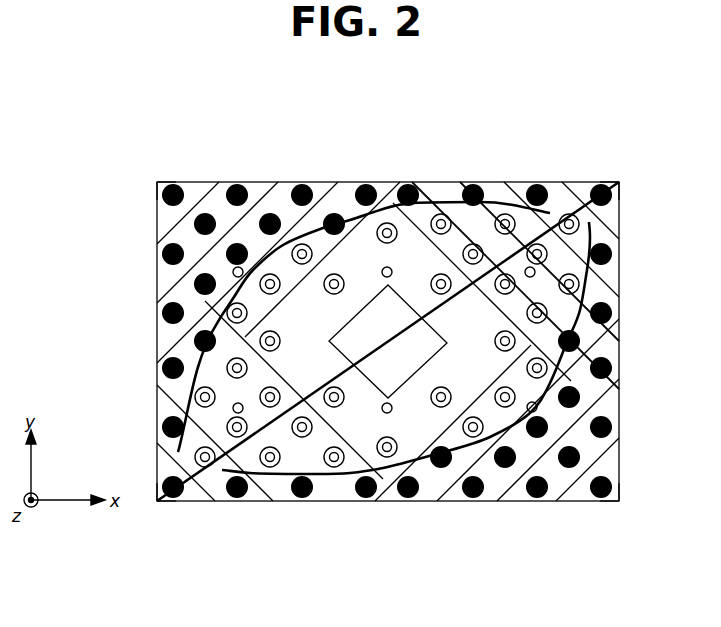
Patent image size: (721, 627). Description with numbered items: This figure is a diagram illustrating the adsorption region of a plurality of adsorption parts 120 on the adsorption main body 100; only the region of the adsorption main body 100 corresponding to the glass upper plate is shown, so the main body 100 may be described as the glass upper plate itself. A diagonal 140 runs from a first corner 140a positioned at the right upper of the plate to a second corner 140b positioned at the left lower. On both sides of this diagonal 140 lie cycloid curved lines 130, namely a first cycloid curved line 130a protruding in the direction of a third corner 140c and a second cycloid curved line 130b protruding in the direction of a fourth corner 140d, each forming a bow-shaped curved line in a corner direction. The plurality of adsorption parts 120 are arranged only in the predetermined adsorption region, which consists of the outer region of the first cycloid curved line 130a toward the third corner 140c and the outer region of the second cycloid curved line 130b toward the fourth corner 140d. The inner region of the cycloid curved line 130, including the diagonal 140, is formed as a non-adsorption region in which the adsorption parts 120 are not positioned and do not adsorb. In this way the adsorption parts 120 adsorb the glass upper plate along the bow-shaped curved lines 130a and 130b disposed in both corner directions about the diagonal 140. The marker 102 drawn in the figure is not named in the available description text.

The adsorption main body 100 is at (623, 200).
The second pattern elements 102 is at (528, 267).
The adsorption parts 120 is at (237, 244).
The cycloid curved line 130 is at (384, 394).
The first cycloid curved line 130a is at (231, 306).
The second cycloid curved line 130b is at (380, 470).
The diagonal 140 is at (200, 470).
The first corner 140a is at (618, 181).
The second corner 140b is at (160, 502).
The third corner 140c is at (157, 181).
The fourth corner 140d is at (618, 502).